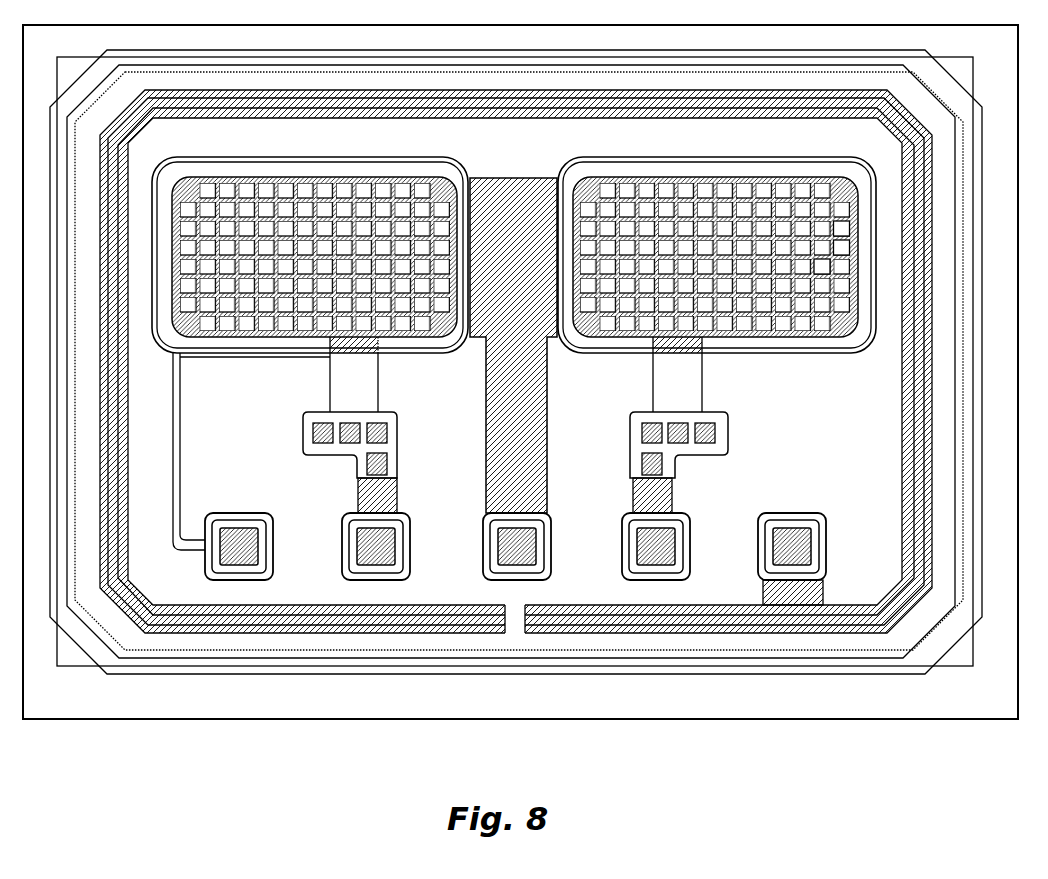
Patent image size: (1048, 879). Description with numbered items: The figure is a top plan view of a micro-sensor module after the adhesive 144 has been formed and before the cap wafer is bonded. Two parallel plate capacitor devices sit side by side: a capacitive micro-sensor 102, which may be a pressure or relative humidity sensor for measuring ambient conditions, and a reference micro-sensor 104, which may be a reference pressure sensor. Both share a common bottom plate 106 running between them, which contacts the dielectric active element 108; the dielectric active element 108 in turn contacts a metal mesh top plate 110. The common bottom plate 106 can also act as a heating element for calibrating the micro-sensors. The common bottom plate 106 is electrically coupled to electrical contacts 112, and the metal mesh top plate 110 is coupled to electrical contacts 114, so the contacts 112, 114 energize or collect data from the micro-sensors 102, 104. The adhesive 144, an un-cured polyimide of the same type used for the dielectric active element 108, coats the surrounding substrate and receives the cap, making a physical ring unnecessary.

The capacitive micro-sensor 102 is at (336, 143).
The reference micro-sensor 104 is at (795, 267).
The common bottom plate 106 is at (526, 289).
The dielectric active element 108 is at (832, 263).
The metal mesh top plate 110 is at (583, 320).
The electrical contacts 112 is at (233, 537).
The electrical contacts 114 is at (374, 539).
The adhesive 144 is at (250, 426).